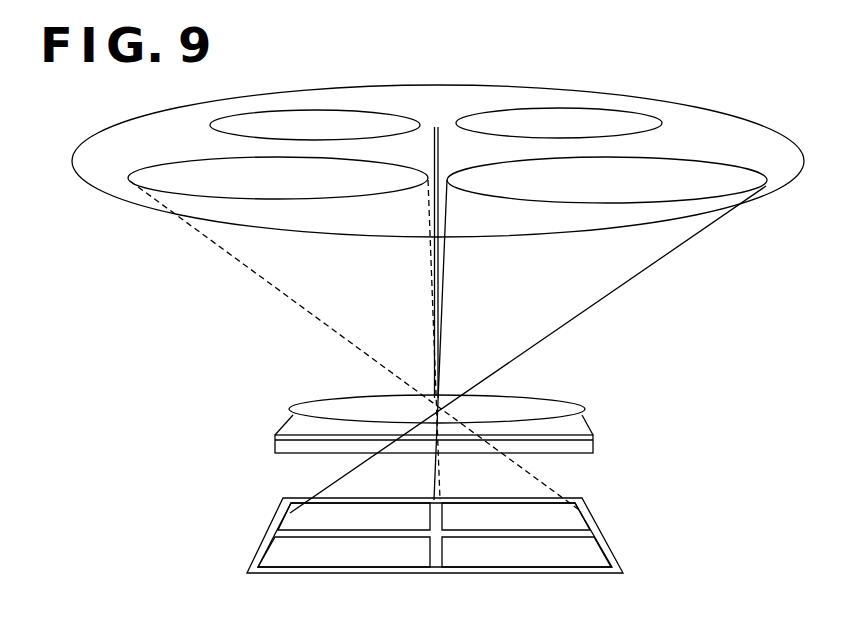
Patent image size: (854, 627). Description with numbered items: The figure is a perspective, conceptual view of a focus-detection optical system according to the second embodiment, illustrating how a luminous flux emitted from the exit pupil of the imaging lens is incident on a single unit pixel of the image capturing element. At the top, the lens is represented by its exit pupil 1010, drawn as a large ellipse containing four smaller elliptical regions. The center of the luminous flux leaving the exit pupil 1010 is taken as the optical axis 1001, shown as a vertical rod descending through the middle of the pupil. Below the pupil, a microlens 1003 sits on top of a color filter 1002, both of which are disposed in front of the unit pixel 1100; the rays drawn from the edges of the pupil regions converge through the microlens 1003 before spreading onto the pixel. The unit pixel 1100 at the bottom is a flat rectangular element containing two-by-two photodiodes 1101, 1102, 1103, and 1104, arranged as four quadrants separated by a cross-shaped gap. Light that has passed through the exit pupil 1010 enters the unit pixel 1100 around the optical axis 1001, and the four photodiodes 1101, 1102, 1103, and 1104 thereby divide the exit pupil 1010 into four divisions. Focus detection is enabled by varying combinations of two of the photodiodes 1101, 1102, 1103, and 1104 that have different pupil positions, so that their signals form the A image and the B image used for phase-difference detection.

The optical axis 1001 is at (434, 128).
The exit pupil 1010 is at (101, 195).
The microlens 1003 is at (290, 412).
The color filter 1002 is at (275, 448).
The unit pixel 1100 is at (423, 532).
The photodiode 1101 is at (281, 518).
The photodiode 1102 is at (267, 551).
The photodiode 1103 is at (588, 512).
The photodiode 1104 is at (604, 546).